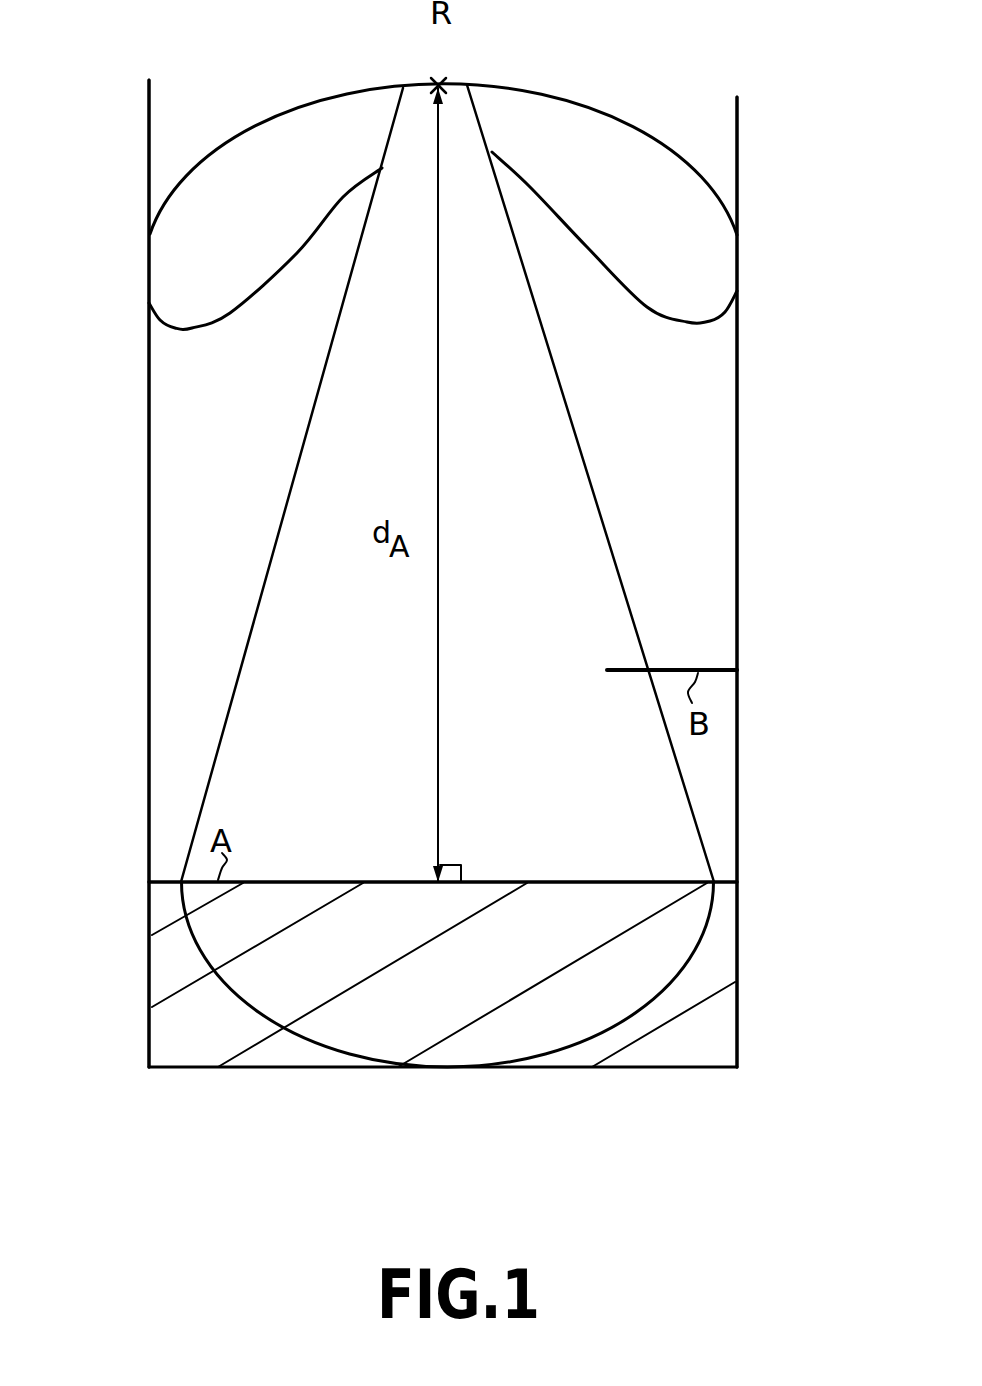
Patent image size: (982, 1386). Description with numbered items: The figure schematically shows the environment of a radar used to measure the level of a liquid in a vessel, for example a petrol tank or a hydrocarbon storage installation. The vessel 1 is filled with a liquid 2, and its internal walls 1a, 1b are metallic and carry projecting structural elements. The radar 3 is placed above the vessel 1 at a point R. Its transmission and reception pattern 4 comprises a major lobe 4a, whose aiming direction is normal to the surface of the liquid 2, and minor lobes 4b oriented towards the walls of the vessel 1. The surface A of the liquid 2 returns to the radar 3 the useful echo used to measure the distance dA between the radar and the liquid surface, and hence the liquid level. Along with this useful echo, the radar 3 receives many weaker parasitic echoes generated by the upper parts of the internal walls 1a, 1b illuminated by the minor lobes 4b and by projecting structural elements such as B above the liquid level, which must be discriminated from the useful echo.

The vessel 1 is at (145, 755).
The internal wall 1a is at (148, 553).
The internal wall 1b is at (737, 497).
The liquid 2 is at (674, 939).
The radar 3 is at (441, 83).
The transmission and reception pattern 4 is at (310, 103).
The major lobe 4a is at (578, 437).
The minor lobes 4b is at (195, 170).